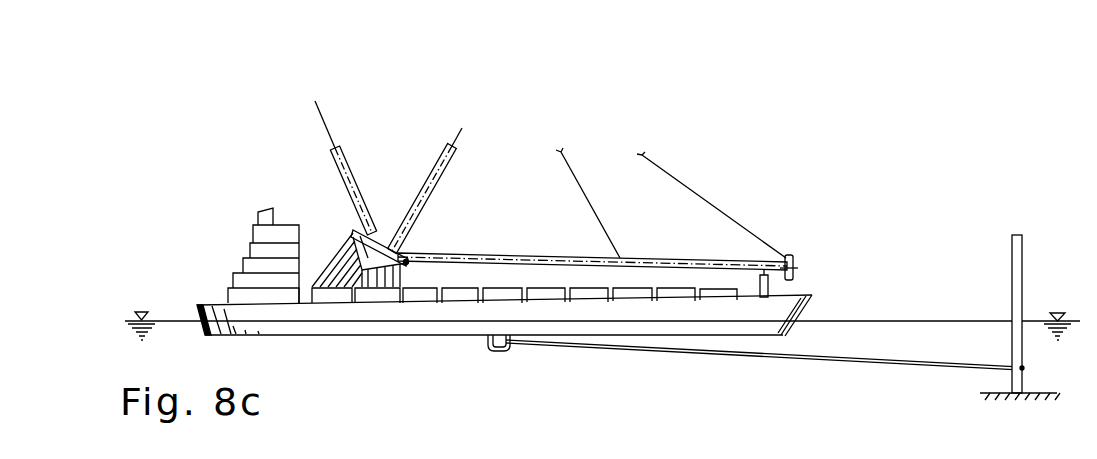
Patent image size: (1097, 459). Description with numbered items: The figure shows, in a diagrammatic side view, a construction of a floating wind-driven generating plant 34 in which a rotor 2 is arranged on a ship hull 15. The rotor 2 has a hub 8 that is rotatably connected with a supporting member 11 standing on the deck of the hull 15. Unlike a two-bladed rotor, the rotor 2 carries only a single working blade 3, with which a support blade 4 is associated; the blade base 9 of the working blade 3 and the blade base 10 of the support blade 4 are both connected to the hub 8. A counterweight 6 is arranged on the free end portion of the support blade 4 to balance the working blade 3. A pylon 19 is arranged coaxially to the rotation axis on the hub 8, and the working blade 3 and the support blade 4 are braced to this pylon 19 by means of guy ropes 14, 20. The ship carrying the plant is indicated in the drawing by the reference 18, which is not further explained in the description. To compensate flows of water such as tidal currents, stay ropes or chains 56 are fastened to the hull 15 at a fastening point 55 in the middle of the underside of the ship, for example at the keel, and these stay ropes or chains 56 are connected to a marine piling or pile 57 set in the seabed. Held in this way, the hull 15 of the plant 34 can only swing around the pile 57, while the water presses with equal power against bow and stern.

The rotor 2 is at (500, 169).
The working blade 3 is at (353, 177).
The support blade 4 is at (508, 255).
The counterweight 6 is at (795, 257).
The hub 8 is at (357, 240).
The blade base 9 is at (368, 225).
The blade base 10 is at (408, 256).
The supporting member 11 is at (315, 252).
The guy ropes 14 is at (582, 188).
The hull 15 is at (196, 304).
The ship hull 18 is at (186, 262).
The pylon 19 is at (428, 180).
The guy rope 20 is at (687, 185).
The wind-driven generating plant 34 is at (817, 156).
The fastening point 55 is at (492, 352).
The stay ropes or chains 56 is at (790, 362).
The pile 57 is at (1020, 298).